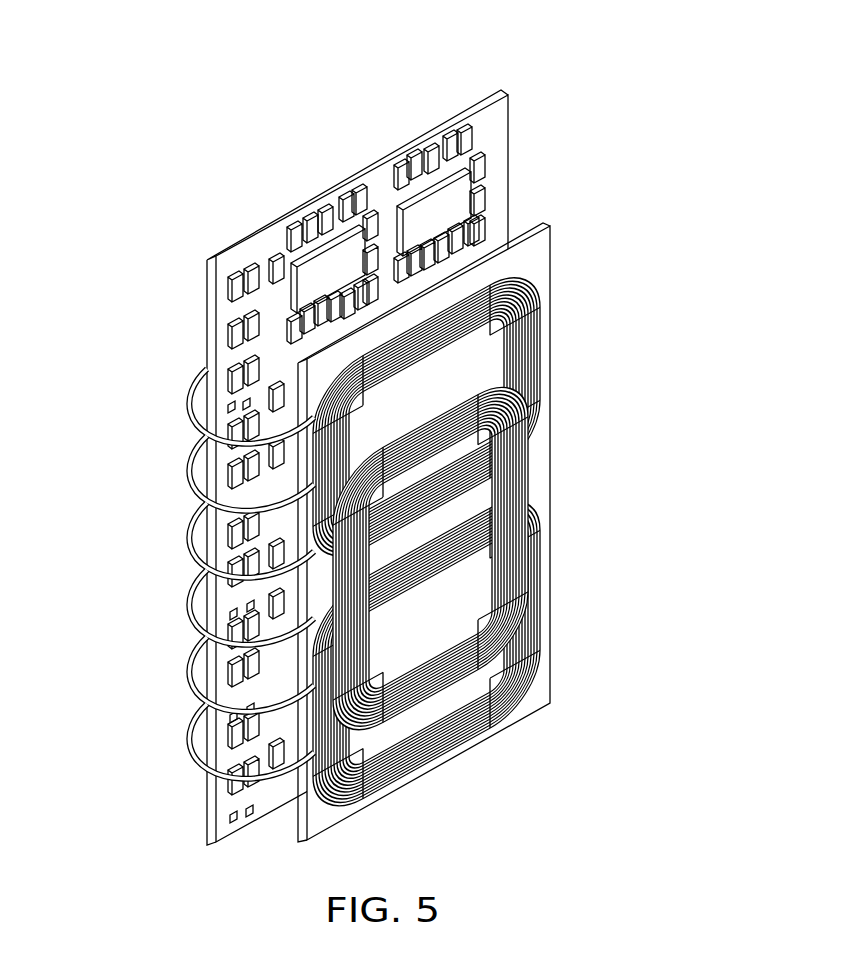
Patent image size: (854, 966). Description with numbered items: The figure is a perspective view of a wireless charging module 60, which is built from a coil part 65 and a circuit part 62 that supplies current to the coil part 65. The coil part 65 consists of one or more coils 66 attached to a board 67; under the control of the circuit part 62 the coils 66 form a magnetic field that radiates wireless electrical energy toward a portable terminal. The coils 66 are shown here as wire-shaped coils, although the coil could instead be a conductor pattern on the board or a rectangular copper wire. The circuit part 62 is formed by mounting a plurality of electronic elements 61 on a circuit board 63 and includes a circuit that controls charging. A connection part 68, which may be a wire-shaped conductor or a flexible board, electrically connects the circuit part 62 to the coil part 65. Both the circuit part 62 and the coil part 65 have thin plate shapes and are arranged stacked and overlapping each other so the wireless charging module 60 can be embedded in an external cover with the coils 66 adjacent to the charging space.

The wireless charging module 60 is at (360, 33).
The electronic elements 61 is at (300, 249).
The circuit part 62 is at (282, 467).
The circuit board 63 is at (221, 333).
The coil part 65 is at (512, 532).
The coil 66 is at (678, 452).
The board 67 is at (551, 470).
The connection part 68 is at (183, 665).